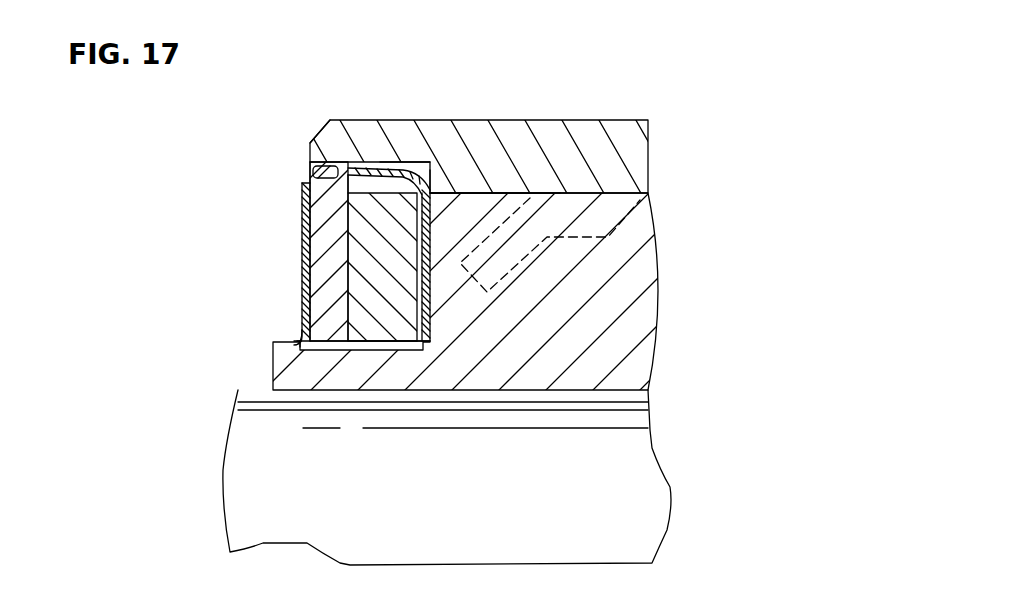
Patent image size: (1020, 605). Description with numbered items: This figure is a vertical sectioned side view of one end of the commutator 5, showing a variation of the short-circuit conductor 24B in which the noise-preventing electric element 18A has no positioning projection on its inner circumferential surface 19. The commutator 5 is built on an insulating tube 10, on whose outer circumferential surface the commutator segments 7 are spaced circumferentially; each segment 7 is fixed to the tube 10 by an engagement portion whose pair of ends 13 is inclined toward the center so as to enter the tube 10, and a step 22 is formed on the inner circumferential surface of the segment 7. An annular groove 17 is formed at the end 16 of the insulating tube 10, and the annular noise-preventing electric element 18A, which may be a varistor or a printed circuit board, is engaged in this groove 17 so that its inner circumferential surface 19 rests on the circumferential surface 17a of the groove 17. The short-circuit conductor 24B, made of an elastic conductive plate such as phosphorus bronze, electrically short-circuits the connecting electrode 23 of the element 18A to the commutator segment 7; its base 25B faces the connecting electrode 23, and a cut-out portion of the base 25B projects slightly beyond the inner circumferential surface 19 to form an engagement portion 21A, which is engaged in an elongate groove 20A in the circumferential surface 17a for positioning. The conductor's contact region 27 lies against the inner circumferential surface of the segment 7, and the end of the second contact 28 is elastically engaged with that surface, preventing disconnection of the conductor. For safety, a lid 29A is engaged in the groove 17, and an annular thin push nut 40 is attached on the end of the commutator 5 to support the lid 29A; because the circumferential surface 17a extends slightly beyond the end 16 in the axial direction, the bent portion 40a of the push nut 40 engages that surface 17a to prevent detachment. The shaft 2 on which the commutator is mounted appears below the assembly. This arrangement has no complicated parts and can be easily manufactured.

The shaft 2 is at (655, 494).
The commutator 5 is at (662, 221).
The commutator segment 7 is at (640, 143).
The insulating tube 10 is at (610, 352).
The end of engagement portion 13 is at (525, 268).
The end of insulating tube 16 is at (308, 141).
The annular groove 17 is at (377, 331).
The circumferential surface of groove 17a is at (303, 320).
The noise-preventing electric element 18A is at (346, 243).
The inner circumferential surface of noise-preventing electric element 19 is at (418, 352).
The elongate groove 20A is at (375, 348).
The engagement portion 21A is at (403, 350).
The step 22 is at (313, 168).
The connecting electrode 23 is at (433, 178).
The short-circuit conductor 24B is at (406, 166).
The base 25B is at (513, 193).
The cap inner surface 27 is at (407, 161).
The second contact 28 is at (362, 162).
The lid 29A is at (306, 226).
The push nut 40 is at (303, 198).
The bent portion 40a is at (292, 342).